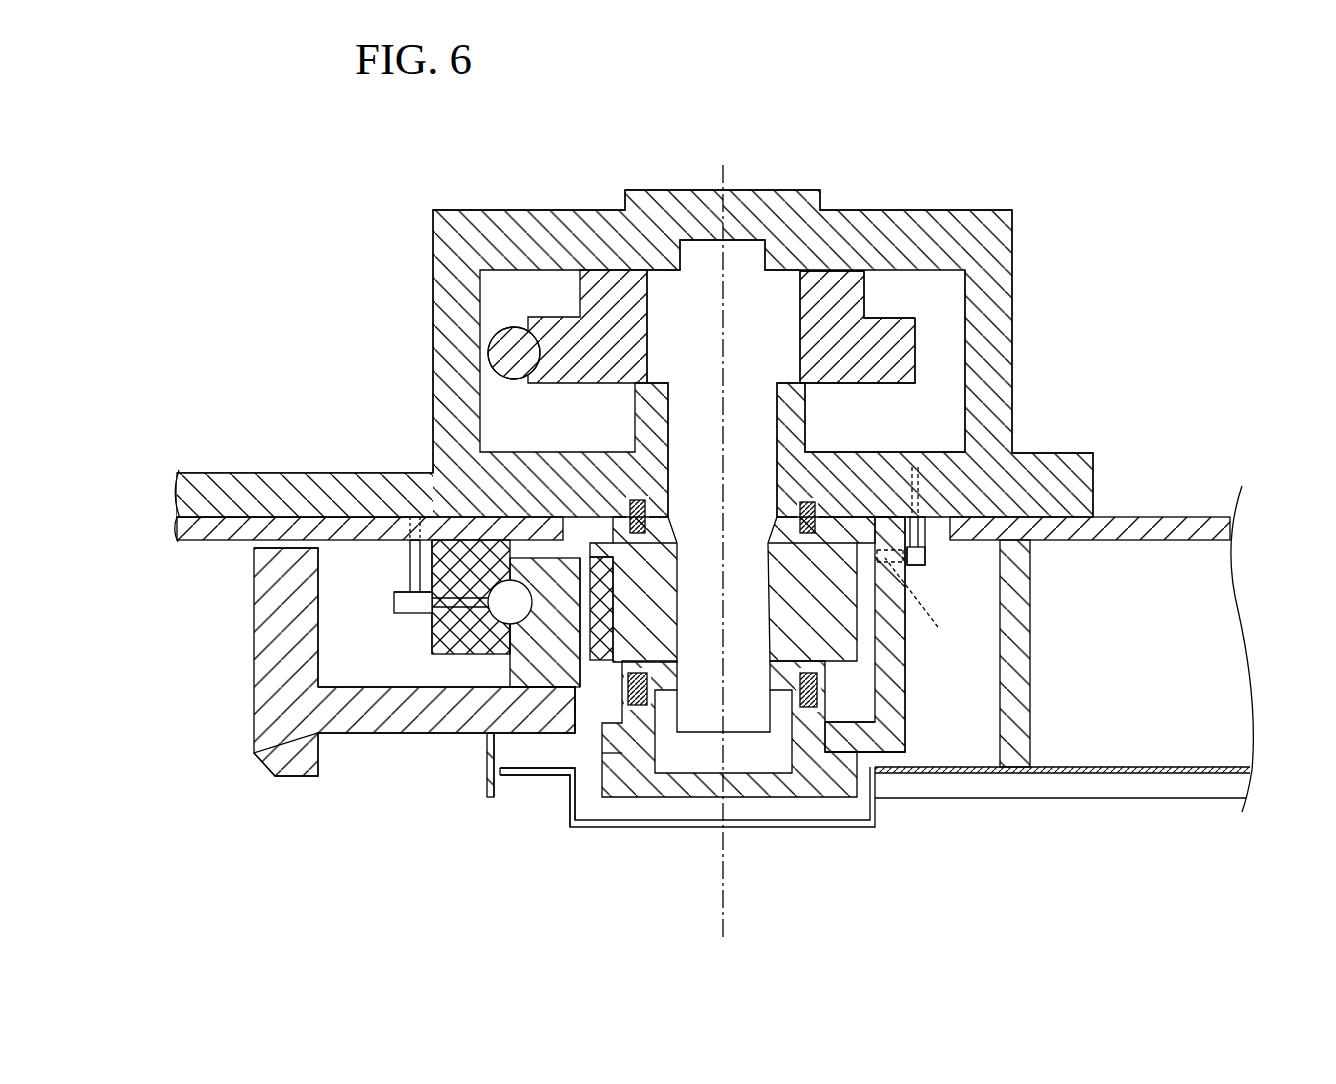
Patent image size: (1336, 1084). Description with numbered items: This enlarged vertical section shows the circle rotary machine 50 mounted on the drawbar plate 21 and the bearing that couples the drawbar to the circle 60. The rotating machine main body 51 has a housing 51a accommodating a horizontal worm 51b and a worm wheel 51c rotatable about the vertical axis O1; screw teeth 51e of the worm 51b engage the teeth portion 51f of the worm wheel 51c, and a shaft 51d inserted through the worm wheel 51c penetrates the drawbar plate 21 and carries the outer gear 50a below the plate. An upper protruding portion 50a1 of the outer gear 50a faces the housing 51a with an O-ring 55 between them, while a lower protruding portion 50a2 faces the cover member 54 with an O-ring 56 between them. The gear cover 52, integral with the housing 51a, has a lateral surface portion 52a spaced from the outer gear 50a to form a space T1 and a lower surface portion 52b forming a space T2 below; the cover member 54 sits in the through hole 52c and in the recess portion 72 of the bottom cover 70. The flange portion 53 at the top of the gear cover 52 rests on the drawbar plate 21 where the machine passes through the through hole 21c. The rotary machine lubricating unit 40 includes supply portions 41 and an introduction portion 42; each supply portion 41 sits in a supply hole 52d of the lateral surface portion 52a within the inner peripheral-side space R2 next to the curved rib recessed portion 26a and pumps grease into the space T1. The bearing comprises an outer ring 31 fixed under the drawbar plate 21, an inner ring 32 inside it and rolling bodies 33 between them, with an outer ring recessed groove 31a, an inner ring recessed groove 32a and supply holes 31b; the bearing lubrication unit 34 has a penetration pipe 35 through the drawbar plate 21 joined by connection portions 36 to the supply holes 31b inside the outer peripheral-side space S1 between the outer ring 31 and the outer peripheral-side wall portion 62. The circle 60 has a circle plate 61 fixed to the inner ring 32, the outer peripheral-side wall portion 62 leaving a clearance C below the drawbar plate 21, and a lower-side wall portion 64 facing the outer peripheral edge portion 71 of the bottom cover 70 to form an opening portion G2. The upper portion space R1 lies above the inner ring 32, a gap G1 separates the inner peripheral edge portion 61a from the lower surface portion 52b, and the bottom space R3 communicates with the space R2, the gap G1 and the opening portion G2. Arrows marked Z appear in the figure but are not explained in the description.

The circle rotary machine 50 is at (1028, 354).
The rotating machine main body 51 is at (565, 102).
The housing 51a is at (903, 233).
The worm 51b is at (515, 340).
The worm wheel 51c is at (850, 303).
The shaft 51d is at (705, 300).
The screw teeth 51e is at (541, 352).
The teeth portion 51f is at (918, 343).
The outer gear 50a is at (835, 632).
The upper protruding portion 50a1 is at (800, 485).
The lower protruding portion 50a2 is at (782, 678).
The flange portion 53 is at (1080, 492).
The drawbar plate 21 is at (1230, 528).
The through hole 21c is at (925, 512).
The O-ring 55 is at (818, 508).
The rotary machine lubricating unit 40 is at (1113, 553).
The supply portion 41 is at (918, 540).
The introduction portion 42 is at (922, 558).
The curved rib recessed portion 26a is at (1031, 668).
The gear cover 52 is at (1046, 847).
The lateral surface portion 52a is at (903, 645).
The lower surface portion 52b is at (875, 748).
The through hole 52c is at (620, 742).
The supply hole 52d is at (934, 600).
The cover member 54 is at (767, 787).
The O-ring 56 is at (808, 708).
The bottom cover 70 is at (1215, 775).
The recess portion 72 is at (690, 812).
The circle 60 is at (246, 744).
The circle plate 61 is at (330, 712).
The inner peripheral edge portion 61a is at (573, 768).
The outer peripheral-side wall portion 62 is at (270, 675).
The lower-side wall portion 64 is at (488, 803).
The outer peripheral edge portion 71 is at (494, 797).
The outer ring 31 is at (452, 550).
The outer ring recessed groove 31a is at (497, 645).
The supply hole 31b is at (433, 654).
The inner ring 32 is at (537, 668).
The inner ring recessed groove 32a is at (515, 660).
The rolling body 33 is at (504, 582).
The bearing lubrication unit 34 is at (185, 578).
The penetration pipe 35 is at (407, 565).
The connection portion 36 is at (396, 603).
The clearance C is at (256, 544).
The outer peripheral-side space S1 is at (375, 666).
The upper portion space R1 is at (524, 555).
The inner peripheral-side space R2 is at (970, 752).
The bottom space R3 is at (532, 764).
The space T1 is at (870, 697).
The space T2 is at (595, 764).
The direction Z is at (576, 549).
The gap G1 is at (597, 780).
The opening portion G2 is at (495, 752).
The axis O1 is at (740, 890).